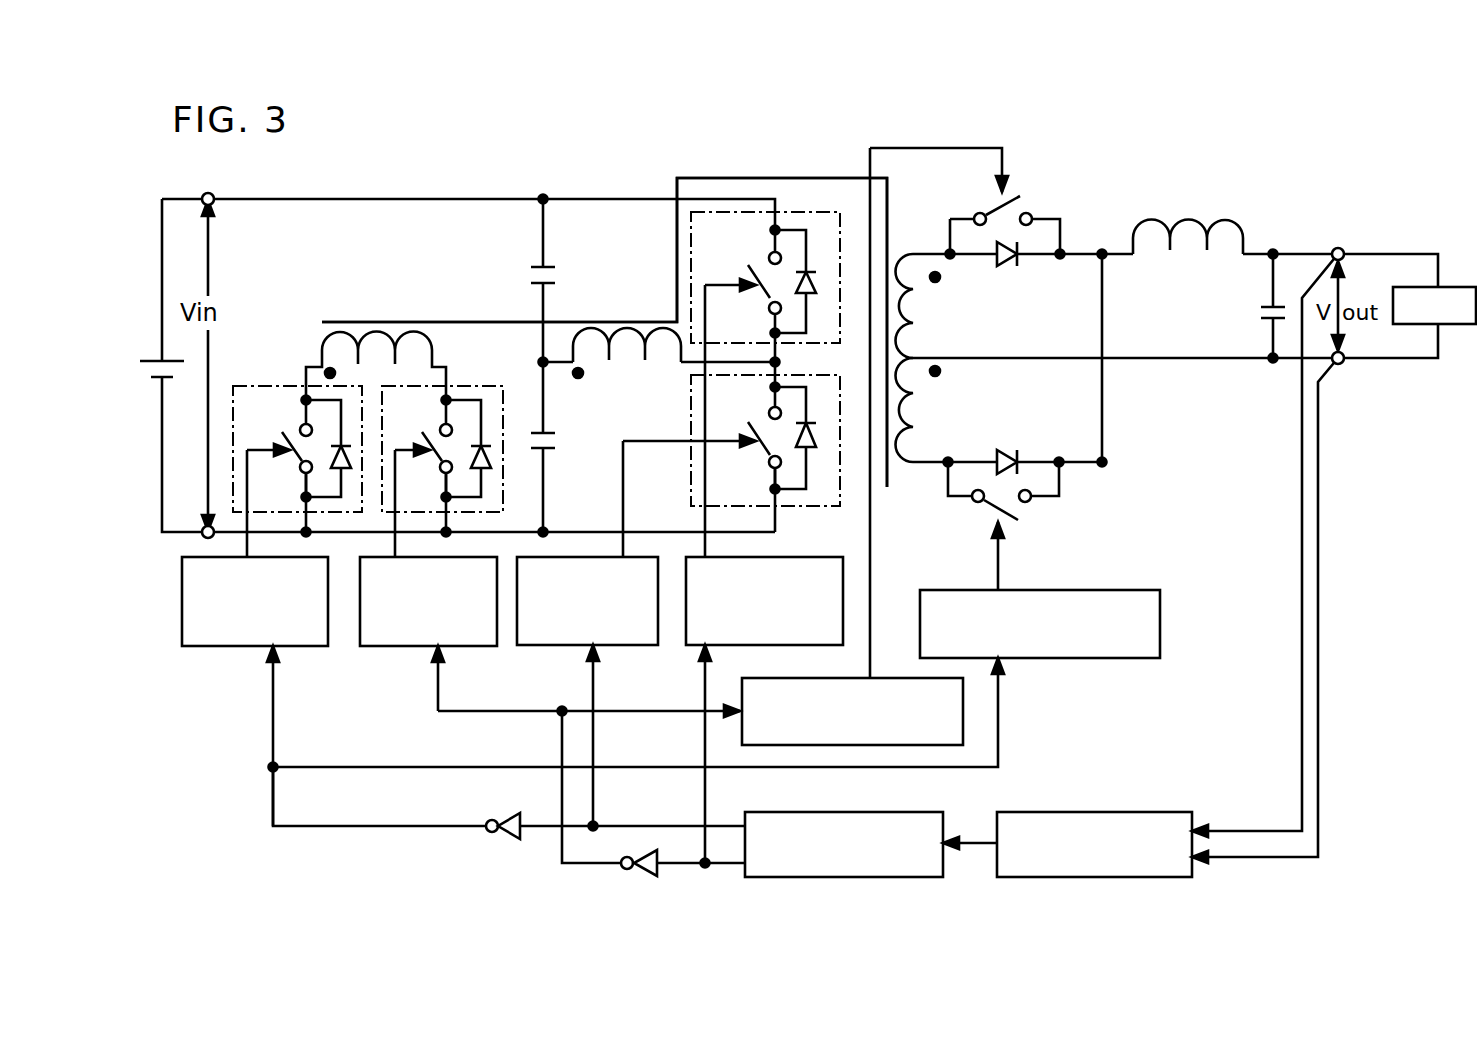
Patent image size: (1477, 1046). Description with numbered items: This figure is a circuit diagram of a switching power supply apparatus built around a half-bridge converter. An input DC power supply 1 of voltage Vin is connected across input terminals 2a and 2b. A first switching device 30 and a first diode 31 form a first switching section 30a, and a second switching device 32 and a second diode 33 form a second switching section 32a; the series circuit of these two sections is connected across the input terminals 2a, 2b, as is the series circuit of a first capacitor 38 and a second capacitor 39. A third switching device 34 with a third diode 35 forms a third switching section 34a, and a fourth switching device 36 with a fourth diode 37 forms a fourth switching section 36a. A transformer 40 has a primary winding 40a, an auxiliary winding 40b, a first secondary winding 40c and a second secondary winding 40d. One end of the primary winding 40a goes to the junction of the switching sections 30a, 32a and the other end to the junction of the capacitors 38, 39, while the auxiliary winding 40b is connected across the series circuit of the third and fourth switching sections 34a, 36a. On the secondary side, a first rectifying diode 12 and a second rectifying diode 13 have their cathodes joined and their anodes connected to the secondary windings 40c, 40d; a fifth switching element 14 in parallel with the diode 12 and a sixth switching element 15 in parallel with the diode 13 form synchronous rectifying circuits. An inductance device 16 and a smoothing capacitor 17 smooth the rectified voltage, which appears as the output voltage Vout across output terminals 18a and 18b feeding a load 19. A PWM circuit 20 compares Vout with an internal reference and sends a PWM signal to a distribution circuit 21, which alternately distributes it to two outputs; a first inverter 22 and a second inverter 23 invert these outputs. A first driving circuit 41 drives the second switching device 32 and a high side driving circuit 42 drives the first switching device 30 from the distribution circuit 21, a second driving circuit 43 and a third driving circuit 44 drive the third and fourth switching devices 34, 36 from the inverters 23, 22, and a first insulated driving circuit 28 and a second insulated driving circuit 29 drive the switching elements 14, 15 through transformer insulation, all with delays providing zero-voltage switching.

The input DC power supply 1 is at (156, 360).
The input terminal 2a is at (212, 196).
The input terminal 2b is at (205, 527).
The first rectifying diode 12 is at (1006, 262).
The second rectifying diode 13 is at (1010, 453).
The fifth switching element 14 is at (1018, 206).
The sixth switching element 15 is at (1012, 512).
The inductance device 16 is at (1196, 228).
The smoothing capacitor 17 is at (1262, 307).
The output terminal 18a is at (1341, 250).
The output terminal 18b is at (1341, 364).
The load 19 is at (1446, 325).
The PWM circuit 20 is at (1108, 812).
The distribution circuit 21 is at (892, 812).
The first inverter 22 is at (634, 872).
The second inverter 23 is at (500, 840).
The first insulated driving circuit 28 is at (894, 678).
The second insulated driving circuit 29 is at (1098, 590).
The first switching device 30 is at (766, 257).
The first switching section 30a is at (795, 212).
The first diode 31 is at (815, 280).
The second switching device 32 is at (766, 413).
The second switching section 32a is at (789, 506).
The second diode 33 is at (814, 420).
The third switching device 34 is at (298, 427).
The third switching section 34a is at (260, 385).
The third diode 35 is at (346, 482).
The fourth switching device 36 is at (440, 427).
The fourth switching section 36a is at (468, 384).
The fourth diode 37 is at (492, 454).
The first capacitor 38 is at (553, 268).
The second capacitor 39 is at (553, 434).
The transformer 40 is at (764, 178).
The primary winding 40a is at (612, 350).
The auxiliary winding 40b is at (320, 340).
The first secondary winding 40c is at (922, 293).
The second secondary winding 40d is at (929, 388).
The first driving circuit 41 is at (566, 648).
The high side driving circuit 42 is at (700, 648).
The second driving circuit 43 is at (236, 648).
The third driving circuit 44 is at (410, 648).